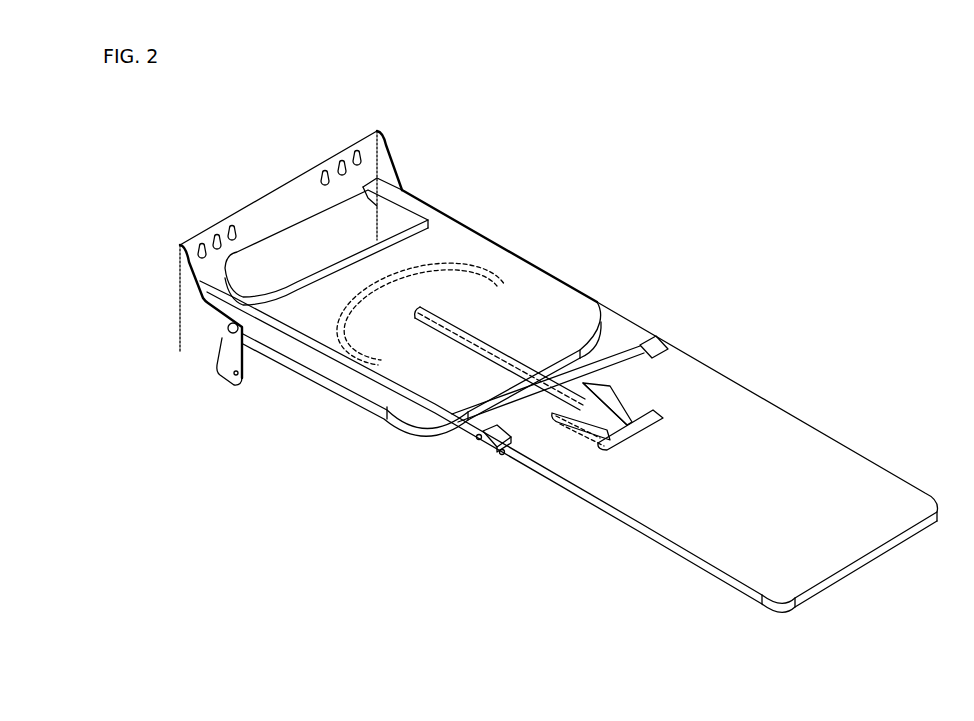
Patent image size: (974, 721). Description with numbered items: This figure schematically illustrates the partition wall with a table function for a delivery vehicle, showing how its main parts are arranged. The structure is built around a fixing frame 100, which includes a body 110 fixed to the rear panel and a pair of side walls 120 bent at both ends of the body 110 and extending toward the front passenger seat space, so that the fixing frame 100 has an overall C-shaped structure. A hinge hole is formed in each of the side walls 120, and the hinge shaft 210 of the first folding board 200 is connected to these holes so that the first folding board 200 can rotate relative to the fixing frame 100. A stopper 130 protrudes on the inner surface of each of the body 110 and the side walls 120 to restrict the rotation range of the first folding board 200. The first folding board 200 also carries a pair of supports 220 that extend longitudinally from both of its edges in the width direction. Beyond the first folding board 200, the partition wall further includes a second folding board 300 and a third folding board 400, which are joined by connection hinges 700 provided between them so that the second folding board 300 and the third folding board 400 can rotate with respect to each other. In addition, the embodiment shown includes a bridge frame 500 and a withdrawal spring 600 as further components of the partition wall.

The fixing frame 100 is at (204, 197).
The body 110 is at (283, 197).
The side walls 120 is at (385, 157).
The stopper 130 is at (360, 157).
The first folding board 200 is at (385, 440).
The hinge shaft 210 is at (229, 334).
The supports 220 is at (383, 183).
The second folding board 300 is at (620, 332).
The third folding board 400 is at (857, 472).
The bridge frame 500 is at (495, 347).
The withdrawal spring 600 is at (567, 423).
The connection hinges 700 is at (660, 342).